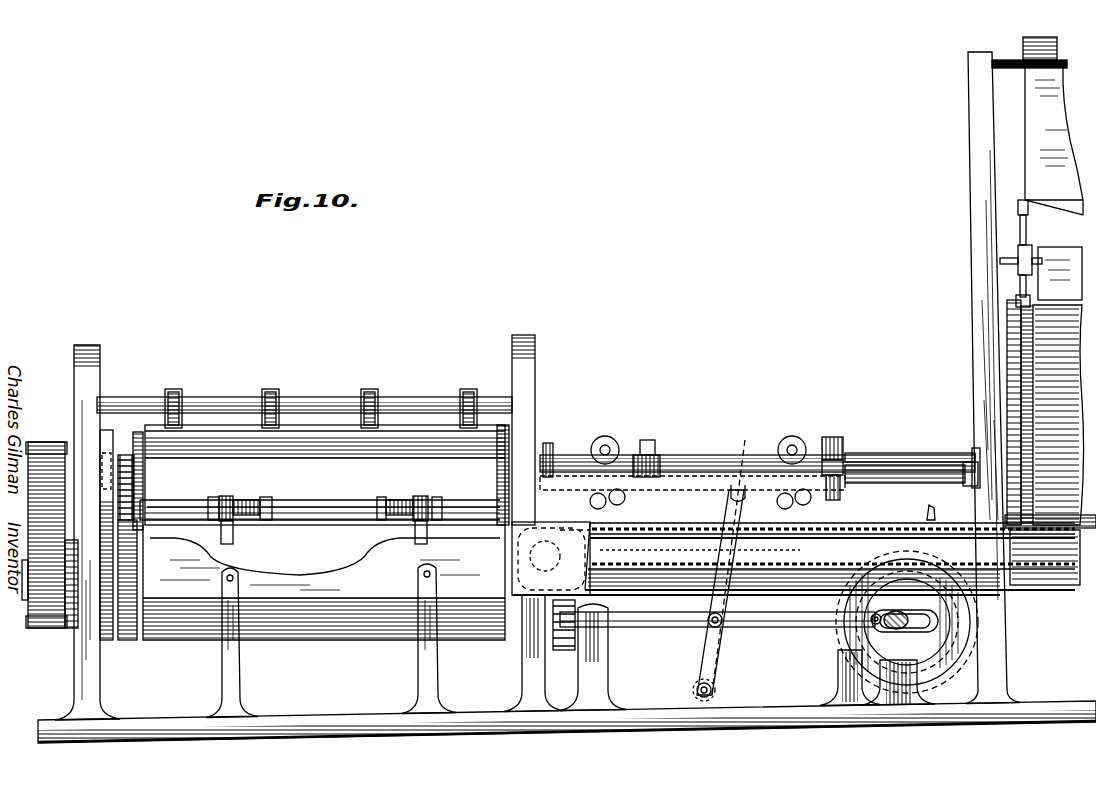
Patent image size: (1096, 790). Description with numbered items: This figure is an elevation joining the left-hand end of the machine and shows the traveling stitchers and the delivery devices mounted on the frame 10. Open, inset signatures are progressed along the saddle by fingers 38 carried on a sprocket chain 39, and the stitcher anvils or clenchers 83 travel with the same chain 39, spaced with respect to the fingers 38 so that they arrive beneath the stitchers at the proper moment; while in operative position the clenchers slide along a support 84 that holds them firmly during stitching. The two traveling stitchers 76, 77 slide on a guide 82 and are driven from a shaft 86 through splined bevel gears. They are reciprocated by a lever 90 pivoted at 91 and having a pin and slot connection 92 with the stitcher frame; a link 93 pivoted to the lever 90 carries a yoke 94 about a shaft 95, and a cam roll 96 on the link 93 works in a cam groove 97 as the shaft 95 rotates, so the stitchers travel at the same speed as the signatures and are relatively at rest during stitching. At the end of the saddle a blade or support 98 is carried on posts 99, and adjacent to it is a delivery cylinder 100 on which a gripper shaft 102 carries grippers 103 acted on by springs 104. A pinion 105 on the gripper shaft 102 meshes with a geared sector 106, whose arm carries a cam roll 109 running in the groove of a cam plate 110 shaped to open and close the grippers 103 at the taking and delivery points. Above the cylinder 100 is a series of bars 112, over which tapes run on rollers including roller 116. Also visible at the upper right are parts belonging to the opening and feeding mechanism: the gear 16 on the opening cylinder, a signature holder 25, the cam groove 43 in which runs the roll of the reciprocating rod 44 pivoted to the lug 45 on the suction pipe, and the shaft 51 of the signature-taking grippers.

The frame 10 is at (979, 148).
The gear 16 is at (1010, 328).
The signature holder 25 is at (1030, 40).
The fingers 38 is at (926, 512).
The sprocket chain 39 is at (798, 533).
The cam groove 43 is at (1028, 386).
The reciprocating rod 44 is at (1016, 286).
The lug 45 is at (1020, 212).
The shaft 51 is at (1021, 70).
The traveling stitcher 76 is at (834, 440).
The traveling stitcher 77 is at (642, 453).
The guide 82 is at (905, 468).
The stitcher anvils or clenchers 83 is at (648, 522).
The support 84 is at (830, 566).
The shaft 86 is at (925, 456).
The lever 90 is at (708, 642).
The pivot 91 is at (695, 690).
The pin and slot connection 92 is at (734, 555).
The link 93 is at (779, 622).
The yoke 94 is at (938, 619).
The shaft 95 is at (885, 630).
The cam roll 96 is at (870, 626).
The cam groove 97 is at (930, 648).
The blade or support 98 is at (330, 582).
The posts 99 is at (226, 664).
The cylinder 100 is at (503, 451).
The gripper shaft 102 is at (183, 507).
The grippers 103 is at (270, 505).
The springs 104 is at (237, 500).
The pinion 105 is at (143, 502).
The geared sector 106 is at (135, 478).
The cam roll 109 is at (102, 462).
The cam plate 110 is at (120, 641).
The bars 112 is at (236, 428).
The roller 116 is at (360, 391).